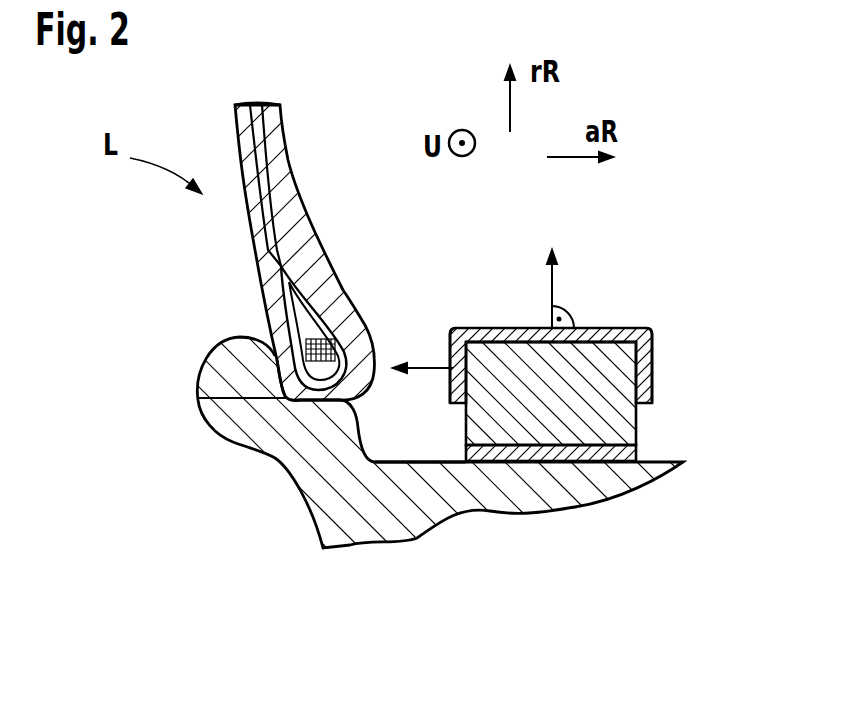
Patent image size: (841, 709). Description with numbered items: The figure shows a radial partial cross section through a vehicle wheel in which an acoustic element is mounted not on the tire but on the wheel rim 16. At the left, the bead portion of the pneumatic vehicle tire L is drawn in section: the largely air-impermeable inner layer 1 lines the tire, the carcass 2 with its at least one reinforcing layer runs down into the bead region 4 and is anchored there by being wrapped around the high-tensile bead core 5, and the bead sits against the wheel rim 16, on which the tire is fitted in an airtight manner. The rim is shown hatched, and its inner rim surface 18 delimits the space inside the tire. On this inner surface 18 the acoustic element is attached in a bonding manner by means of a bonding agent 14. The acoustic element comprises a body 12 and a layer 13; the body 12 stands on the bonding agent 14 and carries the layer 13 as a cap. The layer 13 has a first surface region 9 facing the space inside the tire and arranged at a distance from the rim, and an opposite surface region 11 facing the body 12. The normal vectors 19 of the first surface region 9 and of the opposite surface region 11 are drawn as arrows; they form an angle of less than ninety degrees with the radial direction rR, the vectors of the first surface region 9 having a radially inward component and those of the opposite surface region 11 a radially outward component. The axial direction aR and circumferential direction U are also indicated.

The inner layer 1 is at (277, 167).
The carcass 2 is at (265, 221).
The bead region 4 is at (258, 321).
The bead core 5 is at (200, 400).
The first surface region 9 is at (435, 355).
The opposite surface region 11 is at (563, 345).
The body 12 is at (600, 424).
The layer 13 is at (650, 348).
The bonding agent 14 is at (560, 452).
The wheel rim 16 is at (327, 497).
The inner rim surface 18 is at (417, 442).
The normal vectors 19 is at (422, 368).